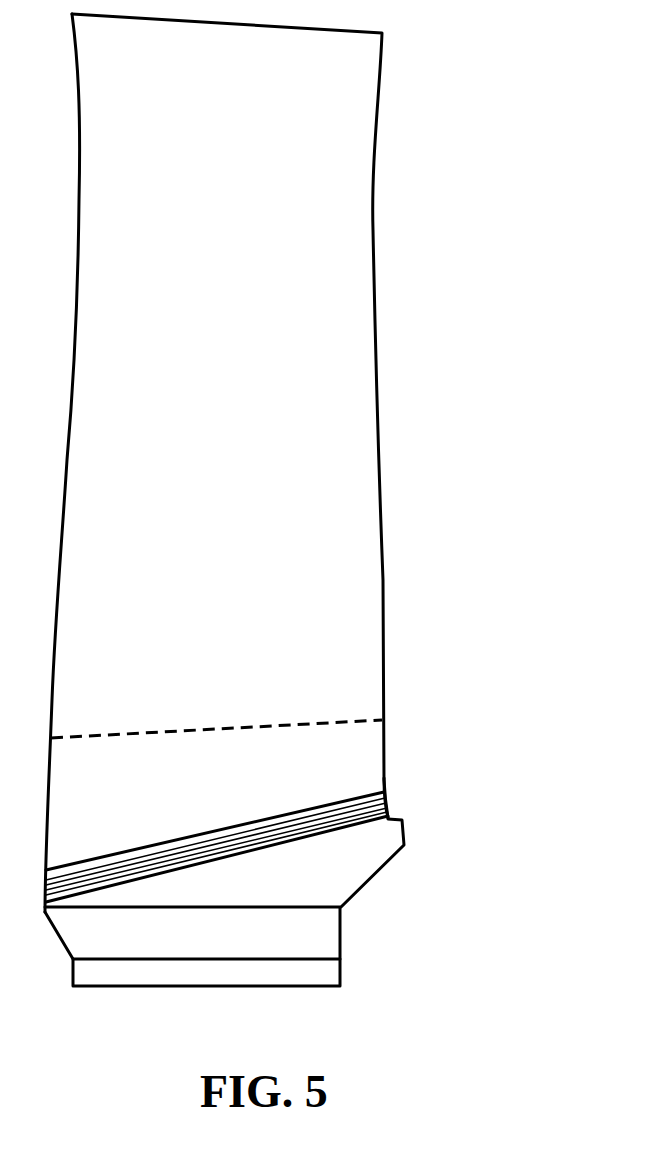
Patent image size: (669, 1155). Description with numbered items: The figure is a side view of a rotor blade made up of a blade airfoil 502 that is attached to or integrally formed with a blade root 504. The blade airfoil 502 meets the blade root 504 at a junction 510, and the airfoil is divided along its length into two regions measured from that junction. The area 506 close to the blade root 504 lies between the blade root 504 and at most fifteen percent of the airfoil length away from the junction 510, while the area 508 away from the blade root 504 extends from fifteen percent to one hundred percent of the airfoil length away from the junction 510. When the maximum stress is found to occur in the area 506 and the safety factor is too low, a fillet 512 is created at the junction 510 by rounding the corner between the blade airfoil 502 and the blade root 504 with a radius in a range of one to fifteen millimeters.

The blade airfoil 502 is at (383, 578).
The blade root 504 is at (365, 885).
The area close to blade root 506 is at (216, 769).
The area away from blade root 508 is at (230, 434).
The junction 510 is at (277, 838).
The fillet 512 is at (386, 801).